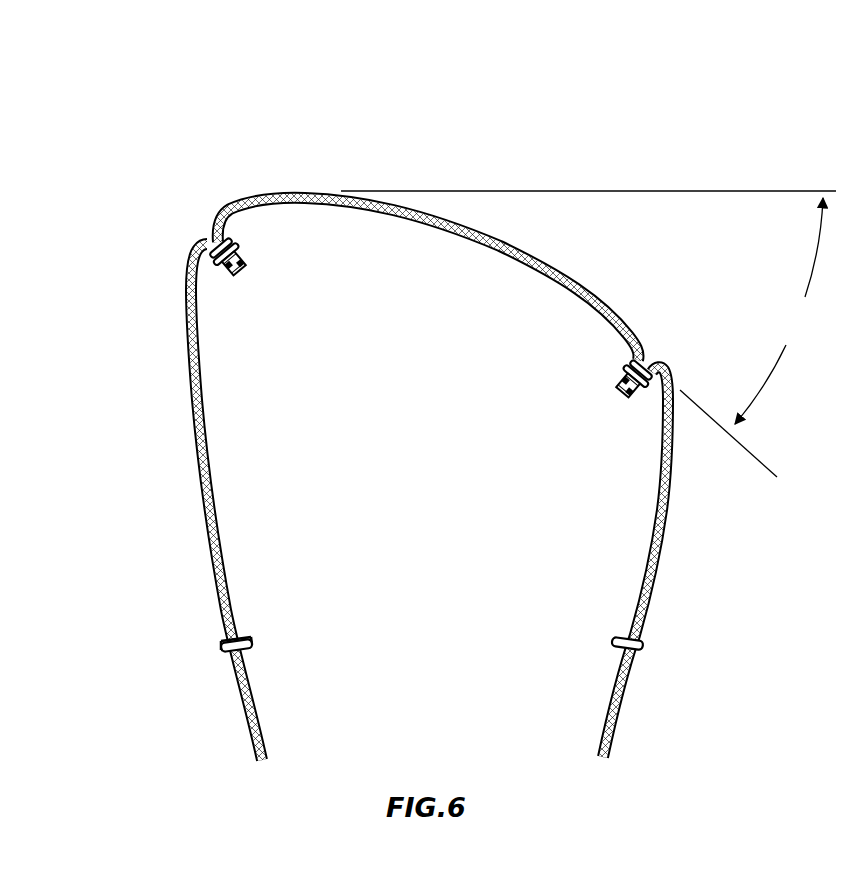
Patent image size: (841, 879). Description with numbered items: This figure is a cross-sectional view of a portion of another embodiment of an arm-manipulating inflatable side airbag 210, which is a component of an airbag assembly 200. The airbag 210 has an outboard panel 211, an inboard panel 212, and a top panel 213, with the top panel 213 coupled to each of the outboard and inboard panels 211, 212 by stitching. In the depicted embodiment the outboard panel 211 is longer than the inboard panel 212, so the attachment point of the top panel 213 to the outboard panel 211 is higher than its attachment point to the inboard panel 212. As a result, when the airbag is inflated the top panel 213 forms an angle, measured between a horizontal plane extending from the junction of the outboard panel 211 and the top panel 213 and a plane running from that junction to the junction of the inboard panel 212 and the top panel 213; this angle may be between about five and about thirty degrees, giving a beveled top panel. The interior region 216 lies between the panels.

The airbag assembly 200 is at (540, 97).
The inflatable side airbag 210 is at (481, 133).
The outboard panel 211 is at (206, 489).
The inboard panel 212 is at (655, 560).
The top panel 213 is at (287, 200).
The lens opening 216 is at (405, 472).